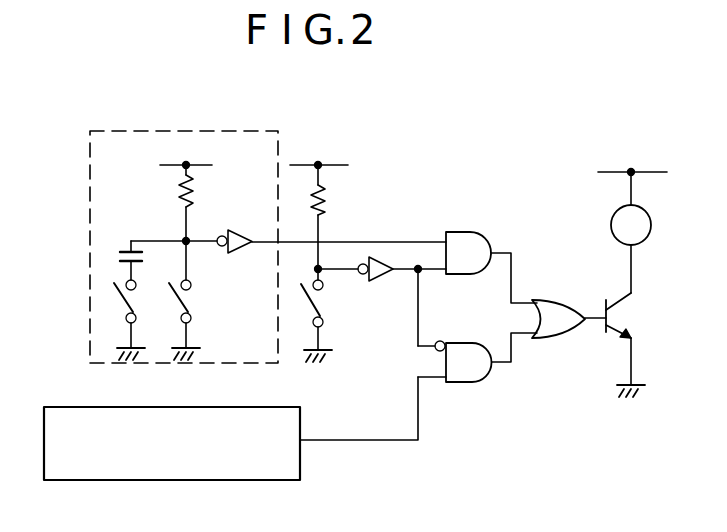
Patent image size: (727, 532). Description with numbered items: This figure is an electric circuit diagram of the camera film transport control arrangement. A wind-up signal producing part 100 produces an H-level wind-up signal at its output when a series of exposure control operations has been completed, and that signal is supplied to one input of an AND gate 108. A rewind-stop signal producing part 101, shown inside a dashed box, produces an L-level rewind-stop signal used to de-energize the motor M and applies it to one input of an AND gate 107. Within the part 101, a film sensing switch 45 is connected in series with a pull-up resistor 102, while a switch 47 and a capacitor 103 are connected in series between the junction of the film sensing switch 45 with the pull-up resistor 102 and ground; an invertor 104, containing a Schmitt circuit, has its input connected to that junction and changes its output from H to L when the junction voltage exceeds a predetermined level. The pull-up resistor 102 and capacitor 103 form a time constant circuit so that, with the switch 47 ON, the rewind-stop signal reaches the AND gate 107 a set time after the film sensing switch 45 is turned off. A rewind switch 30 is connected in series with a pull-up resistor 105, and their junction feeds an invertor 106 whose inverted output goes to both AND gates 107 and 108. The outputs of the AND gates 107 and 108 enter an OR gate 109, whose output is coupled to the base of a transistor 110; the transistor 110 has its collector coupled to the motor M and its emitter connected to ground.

The wind-up signal producing part 100 is at (228, 478).
The rewind-stop signal producing part 101 is at (246, 130).
The pull-up resistor 102 is at (207, 192).
The capacitor 103 is at (120, 251).
The invertor 104 is at (247, 255).
The pull-up resistor 105 is at (326, 195).
The invertor 106 is at (379, 282).
The AND gate 107 is at (470, 240).
The AND gate 108 is at (470, 382).
The OR gate 109 is at (555, 334).
The transistor 110 is at (627, 314).
The switch 47 is at (118, 300).
The film sensing switch 45 is at (180, 300).
The rewind switch 30 is at (312, 303).